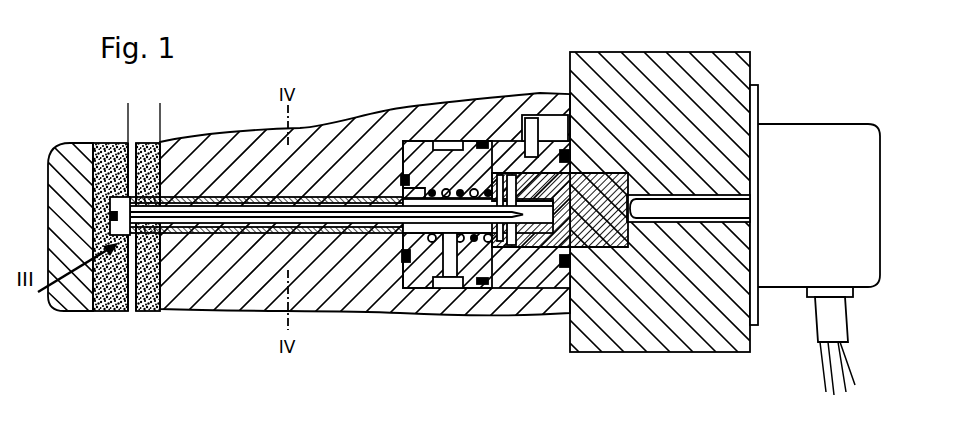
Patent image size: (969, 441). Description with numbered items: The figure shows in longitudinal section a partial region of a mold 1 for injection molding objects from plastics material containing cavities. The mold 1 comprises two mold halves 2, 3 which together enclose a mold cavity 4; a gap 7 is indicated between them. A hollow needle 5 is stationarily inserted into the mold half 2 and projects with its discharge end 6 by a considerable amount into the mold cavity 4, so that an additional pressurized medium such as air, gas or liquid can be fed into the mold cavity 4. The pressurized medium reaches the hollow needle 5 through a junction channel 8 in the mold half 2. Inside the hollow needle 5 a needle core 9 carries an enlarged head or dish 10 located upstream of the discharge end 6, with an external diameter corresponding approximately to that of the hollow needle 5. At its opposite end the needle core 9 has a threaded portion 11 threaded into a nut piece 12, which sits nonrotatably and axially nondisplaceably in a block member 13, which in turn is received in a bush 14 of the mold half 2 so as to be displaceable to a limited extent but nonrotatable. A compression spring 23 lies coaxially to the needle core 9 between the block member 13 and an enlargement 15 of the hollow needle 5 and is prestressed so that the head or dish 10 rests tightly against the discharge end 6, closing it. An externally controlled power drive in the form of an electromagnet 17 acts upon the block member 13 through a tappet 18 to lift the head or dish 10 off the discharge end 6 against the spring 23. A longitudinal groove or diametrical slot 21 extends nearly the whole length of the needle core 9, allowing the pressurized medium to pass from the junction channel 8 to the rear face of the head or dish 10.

The mold 1 is at (165, 326).
The mold half 2 is at (211, 272).
The mold half 3 is at (60, 237).
The mold cavity 4 is at (122, 312).
The hollow needle 5 is at (248, 236).
The discharge end 6 is at (128, 177).
The gap width 7 is at (102, 110).
The junction channel 8 is at (447, 295).
The needle core 9 is at (265, 197).
The head or dish 10 is at (108, 213).
The threaded portion 11 is at (513, 290).
The nut piece 12 is at (548, 140).
The block member 13 is at (548, 297).
The bush 14 is at (537, 262).
The enlargement 15 is at (411, 145).
The electromagnet 17 is at (808, 170).
The tappet 18 is at (680, 205).
The diametrical slot 21 is at (315, 212).
The compression spring 23 is at (446, 140).